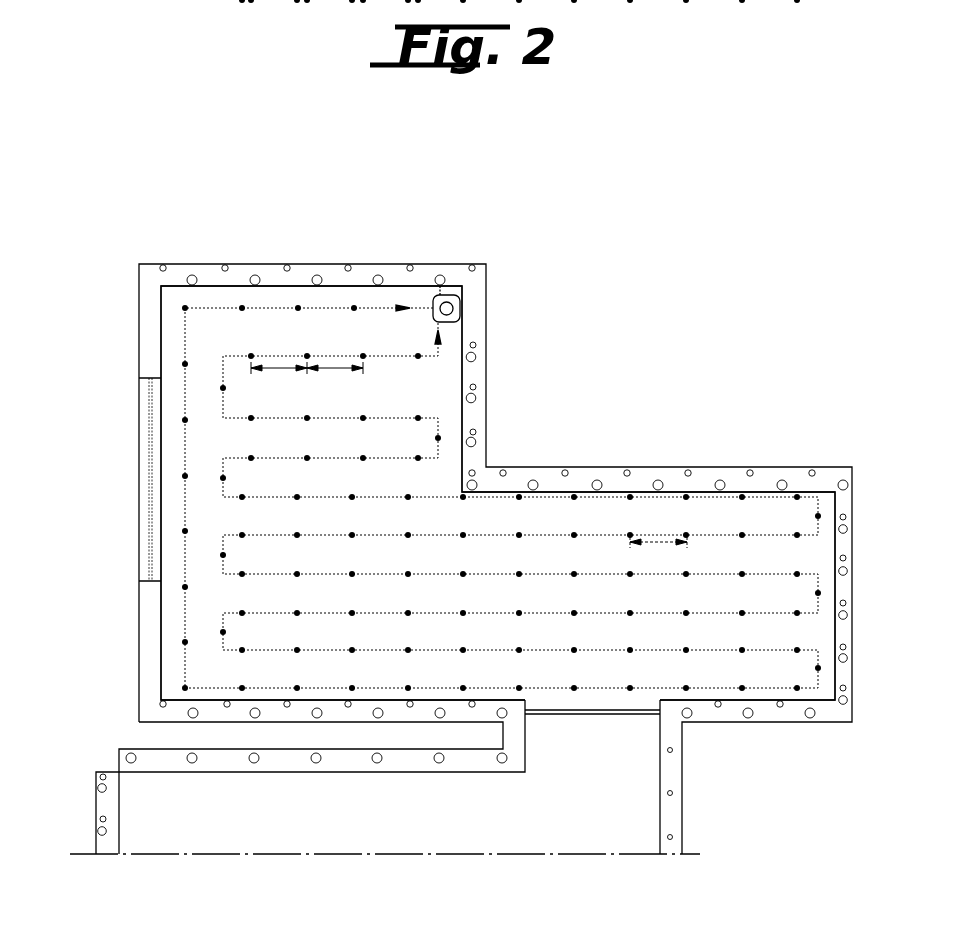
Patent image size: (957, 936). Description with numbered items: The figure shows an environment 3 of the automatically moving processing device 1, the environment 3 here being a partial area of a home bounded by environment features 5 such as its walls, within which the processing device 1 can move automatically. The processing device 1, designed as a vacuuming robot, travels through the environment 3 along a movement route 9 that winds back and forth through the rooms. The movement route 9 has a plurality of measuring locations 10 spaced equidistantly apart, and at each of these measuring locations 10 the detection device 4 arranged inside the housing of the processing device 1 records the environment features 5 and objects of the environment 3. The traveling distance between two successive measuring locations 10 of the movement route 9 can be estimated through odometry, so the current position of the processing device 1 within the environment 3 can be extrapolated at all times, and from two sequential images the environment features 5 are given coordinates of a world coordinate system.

The processing device 1 is at (442, 290).
The environment 3 is at (530, 427).
The detection device 4 is at (462, 306).
The environment features 5 is at (161, 287).
The movement route 9 is at (267, 307).
The measuring locations 10 is at (363, 356).